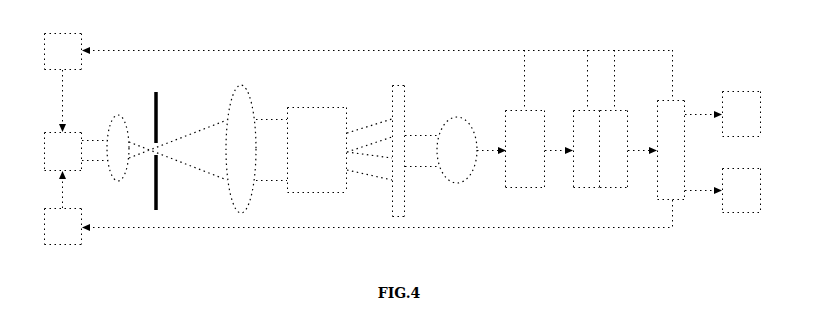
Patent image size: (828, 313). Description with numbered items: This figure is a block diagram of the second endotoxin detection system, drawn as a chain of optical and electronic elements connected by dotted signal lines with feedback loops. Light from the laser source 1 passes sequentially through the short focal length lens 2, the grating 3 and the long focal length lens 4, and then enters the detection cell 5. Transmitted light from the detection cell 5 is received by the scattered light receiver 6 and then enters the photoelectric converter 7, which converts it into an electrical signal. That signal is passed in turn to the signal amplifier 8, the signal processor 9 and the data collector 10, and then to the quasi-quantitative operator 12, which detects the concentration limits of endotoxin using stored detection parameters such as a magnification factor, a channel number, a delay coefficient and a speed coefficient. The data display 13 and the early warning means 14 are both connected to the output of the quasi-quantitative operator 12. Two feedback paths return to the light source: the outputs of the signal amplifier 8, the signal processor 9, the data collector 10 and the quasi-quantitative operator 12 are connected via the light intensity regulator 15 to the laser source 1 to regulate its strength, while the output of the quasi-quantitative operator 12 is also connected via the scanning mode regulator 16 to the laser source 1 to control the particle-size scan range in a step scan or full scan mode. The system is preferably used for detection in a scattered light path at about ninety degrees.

The laser source 1 is at (77, 152).
The short focal length lens 2 is at (167, 148).
The grating 3 is at (156, 140).
The long focal length lens 4 is at (256, 149).
The detection cell 5 is at (340, 150).
The scattered light receiver 6 is at (415, 151).
The photoelectric converter 7 is at (471, 150).
The signal amplifier 8 is at (540, 149).
The signal processor 9 is at (587, 149).
The data collector 10 is at (628, 149).
The quasi-quantitative operator 12 is at (690, 150).
The data display 13 is at (742, 114).
The early warning means 14 is at (742, 191).
The light intensity regulator 15 is at (63, 83).
The scanning mode regulator 16 is at (63, 208).